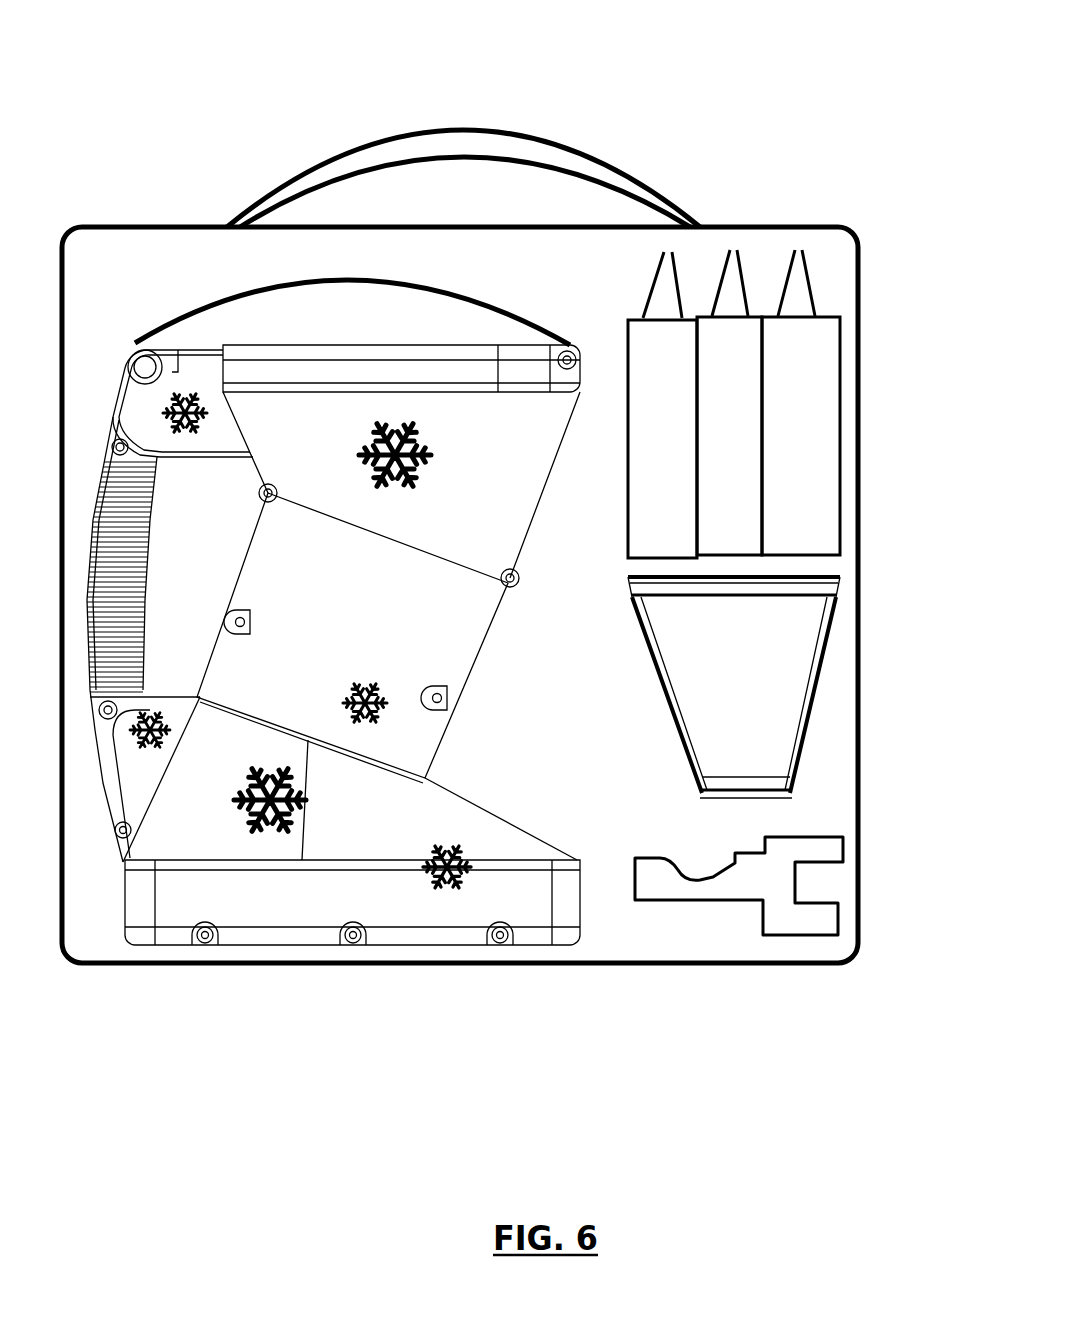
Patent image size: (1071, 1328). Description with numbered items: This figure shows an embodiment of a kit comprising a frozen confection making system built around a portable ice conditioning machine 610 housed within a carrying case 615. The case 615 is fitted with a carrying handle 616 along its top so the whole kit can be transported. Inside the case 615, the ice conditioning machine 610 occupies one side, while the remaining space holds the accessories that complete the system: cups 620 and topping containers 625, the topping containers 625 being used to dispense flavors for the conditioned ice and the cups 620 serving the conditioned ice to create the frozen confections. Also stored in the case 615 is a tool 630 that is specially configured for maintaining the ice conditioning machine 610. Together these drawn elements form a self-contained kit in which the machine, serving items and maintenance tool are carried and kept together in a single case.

The ice conditioning machine 610 is at (245, 907).
The carrying case 615 is at (530, 963).
The carrying handle 616 is at (527, 135).
The cups 620 is at (770, 680).
The topping containers 625 is at (802, 373).
The tool 630 is at (807, 853).